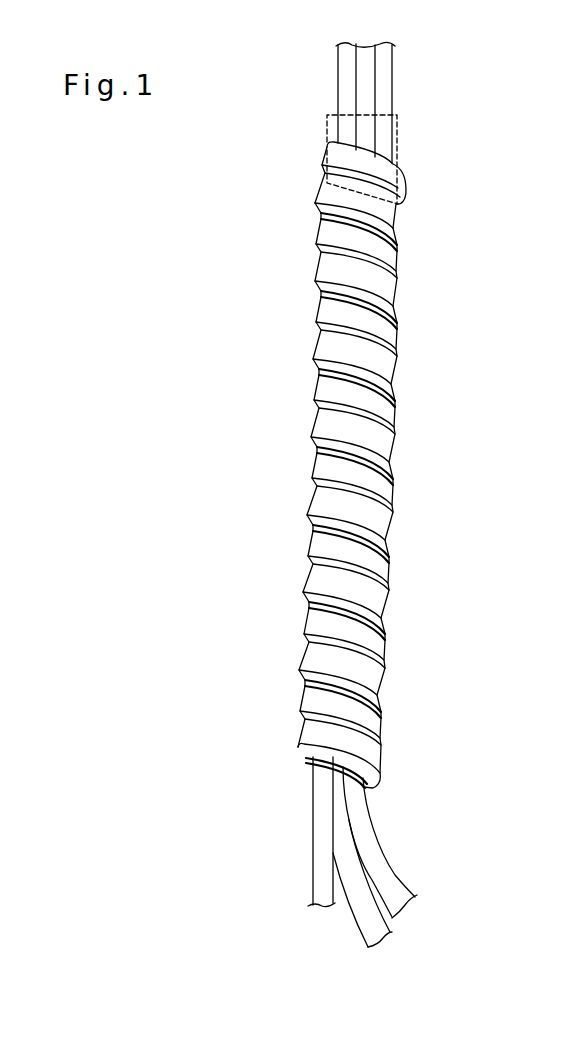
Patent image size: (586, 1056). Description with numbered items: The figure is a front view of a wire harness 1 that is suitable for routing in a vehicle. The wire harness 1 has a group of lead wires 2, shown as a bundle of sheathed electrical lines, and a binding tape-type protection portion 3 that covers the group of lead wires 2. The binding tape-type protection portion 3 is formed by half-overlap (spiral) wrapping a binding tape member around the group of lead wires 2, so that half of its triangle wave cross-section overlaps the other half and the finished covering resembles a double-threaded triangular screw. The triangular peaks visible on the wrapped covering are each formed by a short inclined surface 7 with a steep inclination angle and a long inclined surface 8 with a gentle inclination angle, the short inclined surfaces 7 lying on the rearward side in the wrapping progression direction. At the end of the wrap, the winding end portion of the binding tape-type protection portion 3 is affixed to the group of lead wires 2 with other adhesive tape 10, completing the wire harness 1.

The wire harness 1 is at (489, 216).
The group of lead wires 2 is at (383, 76).
The binding tape-type protection portion 3 is at (374, 465).
The short inclined surface 7 is at (395, 347).
The long inclined surface 8 is at (387, 330).
The adhesive tape 10 is at (399, 148).